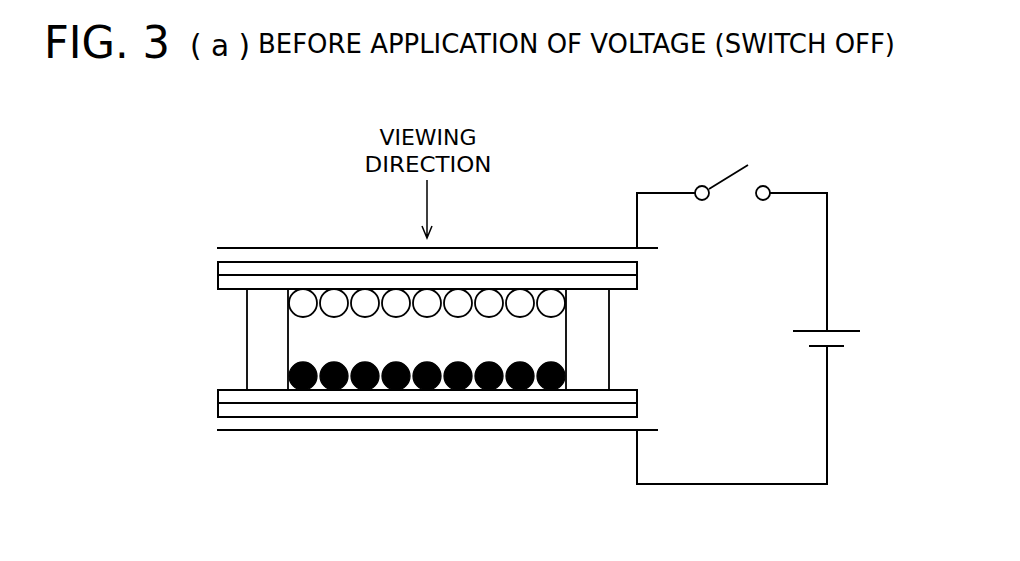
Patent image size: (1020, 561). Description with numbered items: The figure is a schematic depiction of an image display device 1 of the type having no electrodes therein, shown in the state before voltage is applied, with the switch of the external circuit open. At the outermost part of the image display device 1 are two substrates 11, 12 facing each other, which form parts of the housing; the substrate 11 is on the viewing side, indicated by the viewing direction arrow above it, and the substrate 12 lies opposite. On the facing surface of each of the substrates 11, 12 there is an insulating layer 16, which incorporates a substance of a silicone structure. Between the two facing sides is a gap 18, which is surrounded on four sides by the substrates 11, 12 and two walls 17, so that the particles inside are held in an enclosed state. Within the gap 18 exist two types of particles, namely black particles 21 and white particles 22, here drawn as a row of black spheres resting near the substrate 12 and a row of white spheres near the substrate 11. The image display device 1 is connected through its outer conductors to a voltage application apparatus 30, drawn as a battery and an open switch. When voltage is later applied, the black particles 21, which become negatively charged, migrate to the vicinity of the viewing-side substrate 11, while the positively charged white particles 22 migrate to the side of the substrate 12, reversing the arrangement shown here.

The image display device 1 is at (587, 218).
The substrate 11 is at (218, 270).
The substrate 12 is at (218, 410).
The insulating layer 16 is at (218, 284).
The wall 17 is at (268, 372).
The gap 18 is at (548, 343).
The black particles 21 is at (521, 390).
The white particles 22 is at (518, 298).
The voltage application apparatus 30 is at (737, 486).